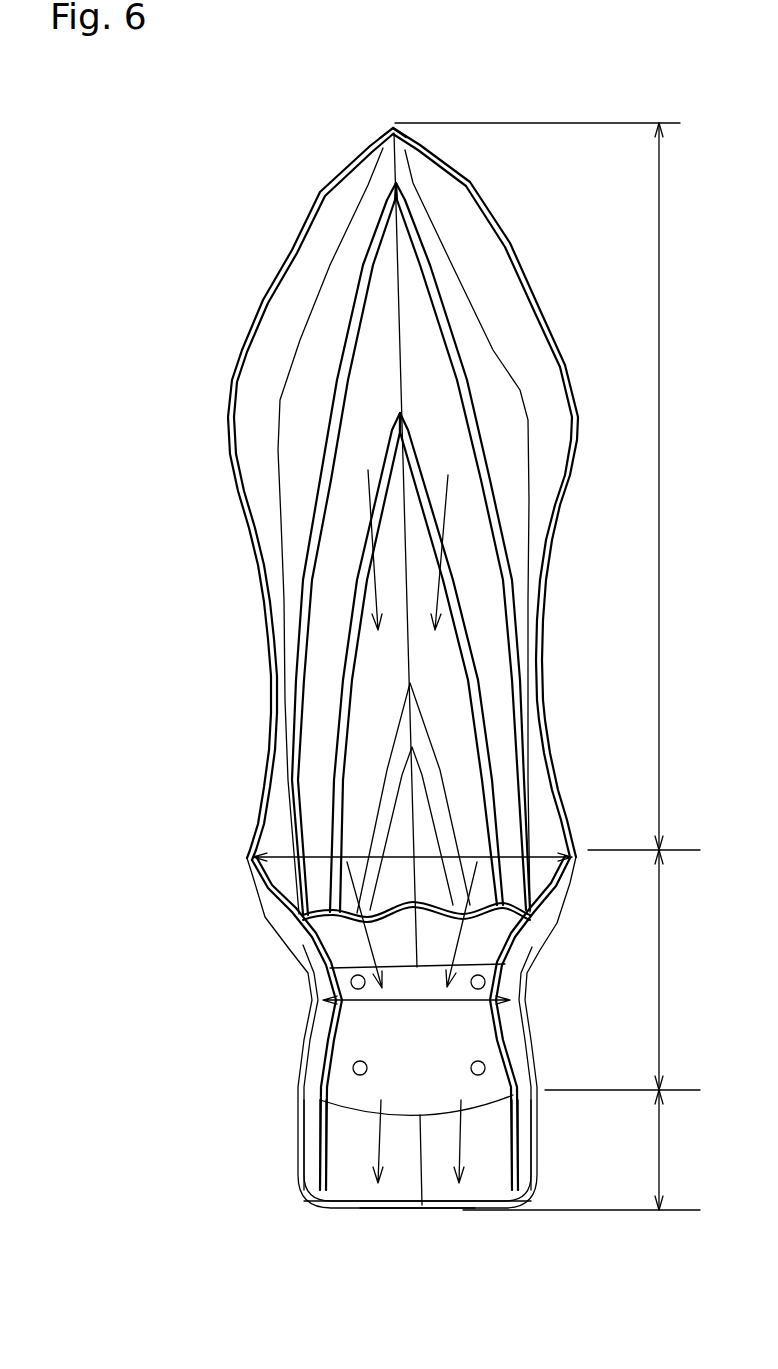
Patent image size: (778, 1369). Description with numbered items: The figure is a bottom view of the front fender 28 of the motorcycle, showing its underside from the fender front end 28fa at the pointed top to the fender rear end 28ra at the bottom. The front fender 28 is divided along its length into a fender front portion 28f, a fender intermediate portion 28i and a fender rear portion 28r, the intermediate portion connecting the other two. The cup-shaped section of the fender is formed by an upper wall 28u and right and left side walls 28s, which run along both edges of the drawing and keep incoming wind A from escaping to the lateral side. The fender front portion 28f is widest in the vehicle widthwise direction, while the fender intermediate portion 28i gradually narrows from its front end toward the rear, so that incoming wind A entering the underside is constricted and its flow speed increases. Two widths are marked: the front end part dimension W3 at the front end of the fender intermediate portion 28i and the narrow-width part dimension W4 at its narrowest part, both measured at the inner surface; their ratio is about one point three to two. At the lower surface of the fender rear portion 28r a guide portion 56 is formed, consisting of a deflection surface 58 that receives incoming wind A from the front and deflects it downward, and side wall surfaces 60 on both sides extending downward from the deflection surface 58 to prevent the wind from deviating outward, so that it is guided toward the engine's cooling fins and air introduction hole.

The front fender 28 is at (242, 700).
The fender front end 28fa is at (393, 125).
The upper wall 28u is at (483, 353).
The fender front portion 28f is at (554, 486).
The side walls 28s is at (543, 660).
The fender intermediate portion 28i is at (629, 970).
The fender rear portion 28r is at (519, 1150).
The fender rear end 28ra is at (397, 1212).
The front end part dimension W3 is at (513, 852).
The narrow-width part dimension W4 is at (470, 1003).
The incoming wind A is at (377, 581).
The guide portion 56 is at (408, 1170).
The deflection surface 58 is at (342, 1152).
The side wall surfaces 60 is at (312, 1120).